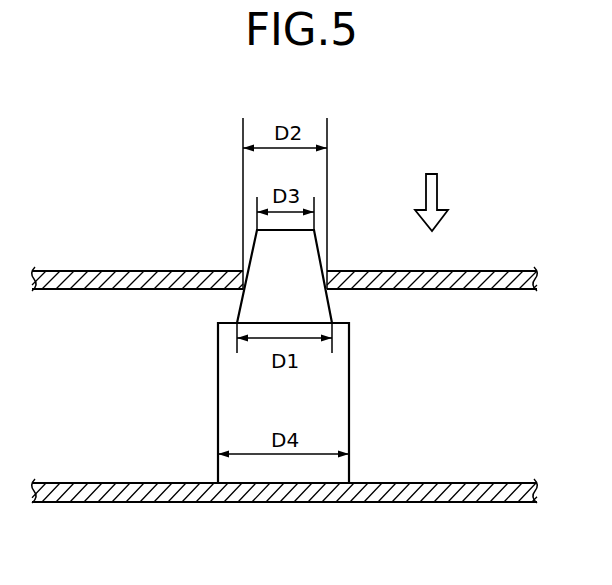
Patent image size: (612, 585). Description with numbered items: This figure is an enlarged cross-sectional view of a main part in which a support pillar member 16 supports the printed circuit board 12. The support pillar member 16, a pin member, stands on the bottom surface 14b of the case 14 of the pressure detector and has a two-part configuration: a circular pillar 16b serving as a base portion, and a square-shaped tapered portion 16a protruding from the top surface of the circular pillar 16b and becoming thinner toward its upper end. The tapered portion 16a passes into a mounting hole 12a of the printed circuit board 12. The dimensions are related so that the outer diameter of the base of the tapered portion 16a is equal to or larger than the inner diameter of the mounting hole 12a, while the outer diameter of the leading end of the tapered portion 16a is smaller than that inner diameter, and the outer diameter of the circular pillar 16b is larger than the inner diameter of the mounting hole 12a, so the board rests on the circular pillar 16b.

The printed circuit board 12 is at (501, 271).
The mounting hole 12a is at (326, 274).
The case 14 is at (285, 496).
The bottom surface 14b is at (500, 484).
The support pillar member 16 is at (279, 356).
The tapered portion 16a is at (240, 298).
The circular pillar 16b is at (335, 417).